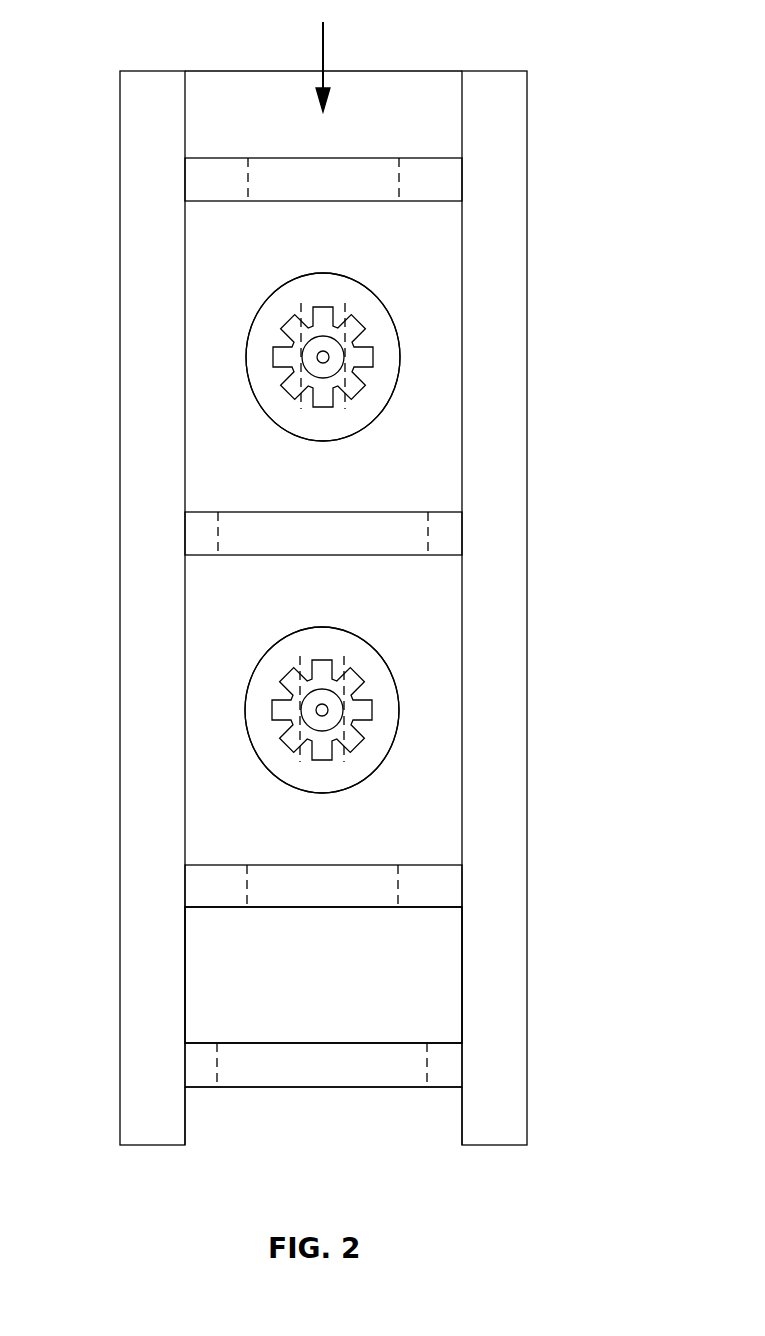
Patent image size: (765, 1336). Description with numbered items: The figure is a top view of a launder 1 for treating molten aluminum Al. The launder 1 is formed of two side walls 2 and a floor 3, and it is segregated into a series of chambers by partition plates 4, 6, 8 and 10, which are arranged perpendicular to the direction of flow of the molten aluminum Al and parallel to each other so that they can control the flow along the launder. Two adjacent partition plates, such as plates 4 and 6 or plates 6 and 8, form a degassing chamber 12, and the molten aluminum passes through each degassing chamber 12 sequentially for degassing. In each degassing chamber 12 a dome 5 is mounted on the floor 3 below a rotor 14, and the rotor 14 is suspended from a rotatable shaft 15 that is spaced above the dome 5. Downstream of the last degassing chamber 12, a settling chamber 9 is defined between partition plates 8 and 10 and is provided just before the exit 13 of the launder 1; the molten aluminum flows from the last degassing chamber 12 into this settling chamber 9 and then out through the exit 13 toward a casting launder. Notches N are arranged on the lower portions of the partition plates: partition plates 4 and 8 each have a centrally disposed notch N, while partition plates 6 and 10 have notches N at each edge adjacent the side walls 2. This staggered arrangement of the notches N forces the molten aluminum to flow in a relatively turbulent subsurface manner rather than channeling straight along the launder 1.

The molten aluminum AI is at (322, 44).
The launder 1 is at (82, 360).
The side walls 2 is at (135, 111).
The floor 3 is at (417, 971).
The partition plate 4 is at (417, 180).
The dome 5 is at (370, 290).
The partition plate 6 is at (258, 527).
The partition plate 8 is at (417, 887).
The settling chamber 9 is at (329, 989).
The partition plate 10 is at (417, 1057).
The degassing chamber 12 is at (337, 489).
The exit 13 is at (336, 1152).
The rotor 14 is at (366, 347).
The rotatable shaft 15 is at (333, 360).
The notches N is at (260, 190).